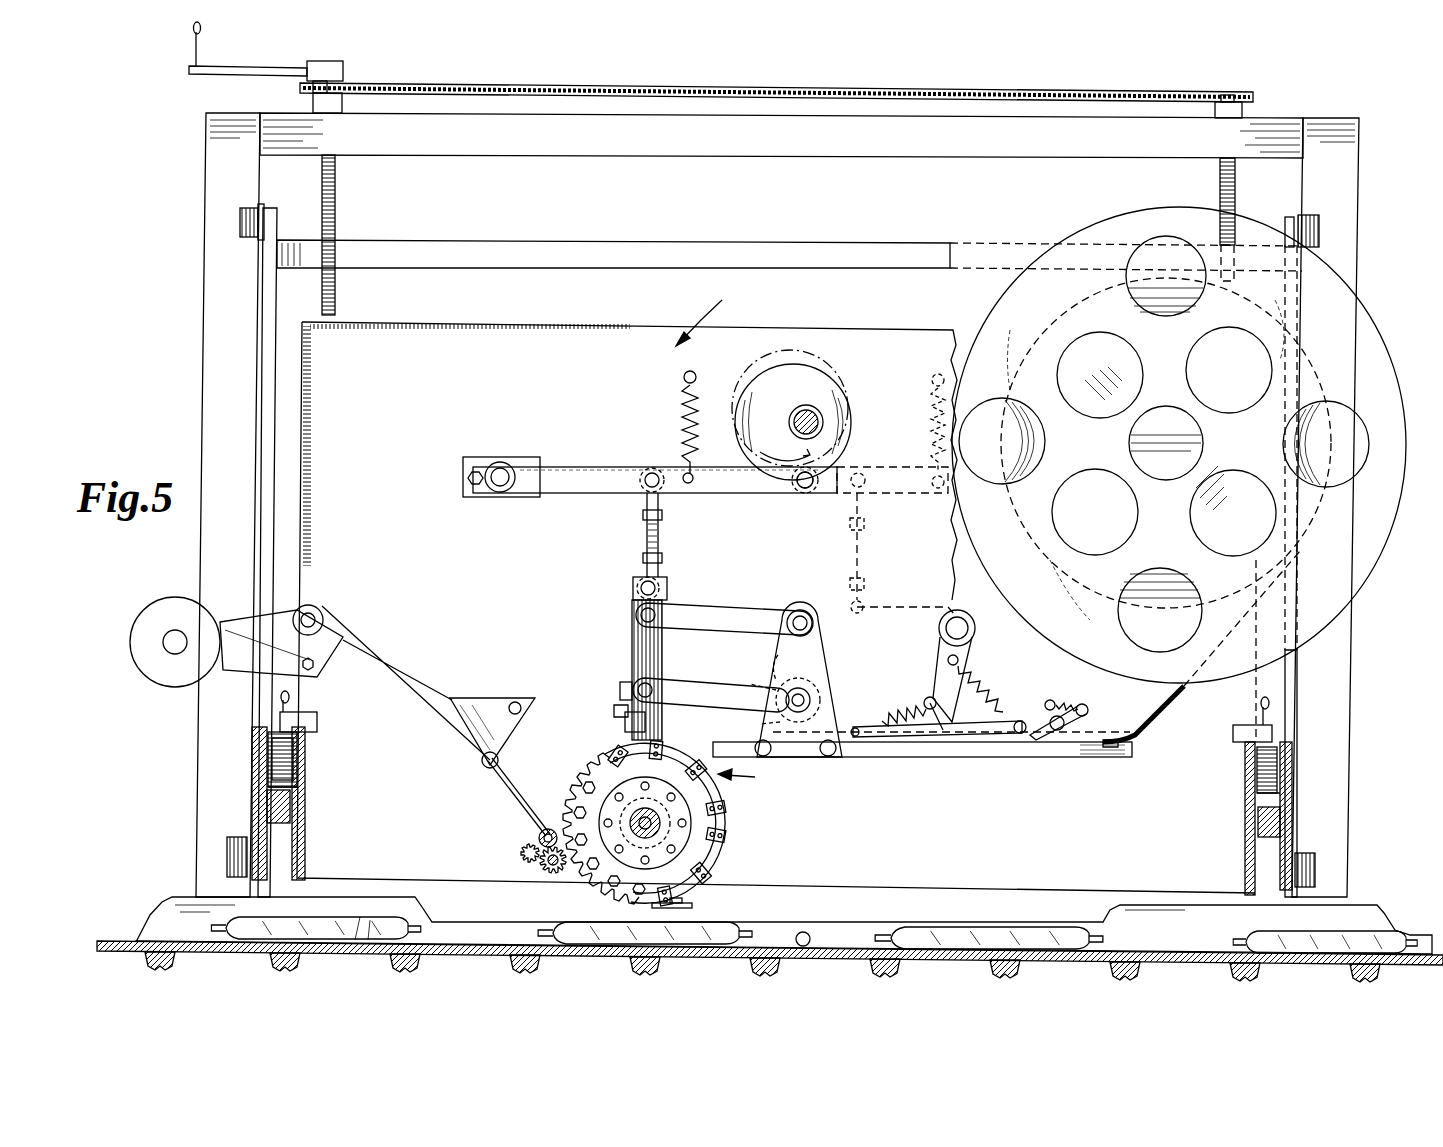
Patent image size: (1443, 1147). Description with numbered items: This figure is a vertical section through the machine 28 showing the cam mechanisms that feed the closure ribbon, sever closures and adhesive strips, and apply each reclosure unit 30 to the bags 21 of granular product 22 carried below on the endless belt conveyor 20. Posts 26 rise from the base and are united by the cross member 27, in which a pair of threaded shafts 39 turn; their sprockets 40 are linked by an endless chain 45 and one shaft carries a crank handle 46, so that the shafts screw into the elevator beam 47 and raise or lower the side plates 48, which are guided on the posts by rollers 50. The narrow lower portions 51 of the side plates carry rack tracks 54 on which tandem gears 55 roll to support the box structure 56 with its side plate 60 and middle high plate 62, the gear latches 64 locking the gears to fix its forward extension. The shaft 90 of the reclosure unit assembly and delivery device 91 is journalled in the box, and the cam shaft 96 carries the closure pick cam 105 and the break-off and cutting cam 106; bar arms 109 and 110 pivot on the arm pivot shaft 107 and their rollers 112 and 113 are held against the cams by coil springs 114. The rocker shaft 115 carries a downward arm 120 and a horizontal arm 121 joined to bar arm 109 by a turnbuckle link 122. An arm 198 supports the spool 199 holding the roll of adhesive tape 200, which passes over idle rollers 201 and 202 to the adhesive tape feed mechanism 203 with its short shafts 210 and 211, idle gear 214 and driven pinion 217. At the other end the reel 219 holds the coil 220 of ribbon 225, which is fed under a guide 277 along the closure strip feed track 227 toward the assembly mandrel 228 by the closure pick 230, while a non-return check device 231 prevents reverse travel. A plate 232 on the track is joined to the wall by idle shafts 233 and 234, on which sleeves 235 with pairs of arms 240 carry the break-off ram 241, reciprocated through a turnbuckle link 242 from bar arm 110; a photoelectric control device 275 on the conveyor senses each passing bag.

The endless belt conveyor 20 is at (1318, 962).
The tubular polyethylene bags 21 is at (322, 942).
The dry pourable granular product 22 is at (370, 897).
The posts 26 is at (212, 176).
The cross member 27 is at (530, 150).
The machine 28 is at (1397, 360).
The reclosure unit 30 is at (690, 904).
The threaded shafts 39 is at (338, 182).
The sprockets 40 is at (345, 98).
The endless chain 45 is at (535, 82).
The crank handle 46 is at (260, 66).
The elevator beam 47 is at (428, 240).
The side plates 48 is at (262, 356).
The rollers 50 is at (240, 221).
The narrow lower portions 51 is at (258, 827).
The rack tracks 54 is at (268, 806).
The gears 55 is at (280, 760).
The box structure 56 is at (706, 314).
The side plate 60 is at (305, 812).
The middle high plate 62 is at (486, 322).
The gear latches 64 is at (290, 718).
The shaft 90 is at (700, 825).
The reclosure unit assembly and delivery device 91 is at (735, 840).
The cam shaft 96 is at (812, 412).
The closure pick cam 105 is at (806, 350).
The closure break-off and adhesive strip cutting cam 106 is at (748, 395).
The arm pivot shaft 107 is at (502, 465).
The bar arm 109 is at (893, 466).
The bar arm 110 is at (575, 466).
The cam responsive roller 112 is at (800, 492).
The cam responsive roller 113 is at (805, 480).
The coil springs 114 is at (680, 410).
The rocker shaft 115 is at (955, 610).
The arm 120 is at (962, 662).
The arm 121 is at (890, 600).
The turnbuckle link 122 is at (865, 537).
The arm 198 is at (240, 624).
The spool 199 is at (176, 597).
The roll of adhesive tape 200 is at (255, 646).
The idle roller 201 is at (323, 612).
The idle roller 202 is at (482, 768).
The adhesive tape feed mechanism 203 is at (520, 838).
The short shaft 210 is at (546, 828).
The short shaft 211 is at (542, 870).
The idle gear 214 is at (520, 852).
The driven pinion 217 is at (592, 870).
The reel 219 is at (1340, 320).
The coil of ribbon 220 is at (1360, 425).
The ribbon 225 is at (1168, 712).
The closure strip feed track 227 is at (1005, 758).
The strip closure assembly mandrel 228 is at (762, 776).
The closure pick 230 is at (902, 710).
The non-return check device 231 is at (1064, 745).
The plate 232 is at (822, 660).
The idle shaft 233 is at (800, 608).
The idle shaft 234 is at (812, 698).
The sleeves 235 is at (770, 658).
The arms 240 is at (714, 608).
The break-off ram 241 is at (632, 648).
The turnbuckle link 242 is at (642, 540).
The photoelectric control device 275 is at (810, 935).
The guide 277 is at (1122, 736).